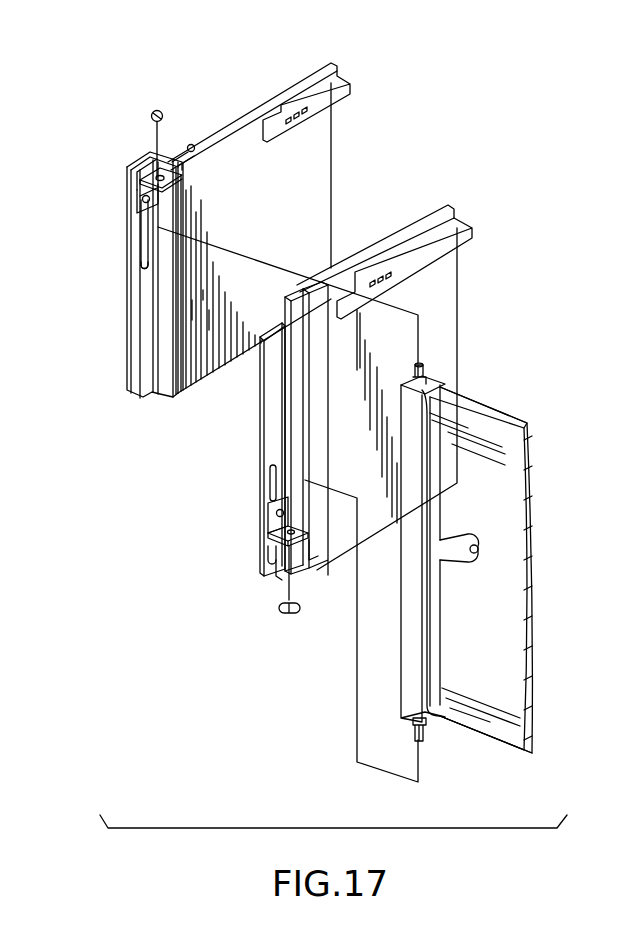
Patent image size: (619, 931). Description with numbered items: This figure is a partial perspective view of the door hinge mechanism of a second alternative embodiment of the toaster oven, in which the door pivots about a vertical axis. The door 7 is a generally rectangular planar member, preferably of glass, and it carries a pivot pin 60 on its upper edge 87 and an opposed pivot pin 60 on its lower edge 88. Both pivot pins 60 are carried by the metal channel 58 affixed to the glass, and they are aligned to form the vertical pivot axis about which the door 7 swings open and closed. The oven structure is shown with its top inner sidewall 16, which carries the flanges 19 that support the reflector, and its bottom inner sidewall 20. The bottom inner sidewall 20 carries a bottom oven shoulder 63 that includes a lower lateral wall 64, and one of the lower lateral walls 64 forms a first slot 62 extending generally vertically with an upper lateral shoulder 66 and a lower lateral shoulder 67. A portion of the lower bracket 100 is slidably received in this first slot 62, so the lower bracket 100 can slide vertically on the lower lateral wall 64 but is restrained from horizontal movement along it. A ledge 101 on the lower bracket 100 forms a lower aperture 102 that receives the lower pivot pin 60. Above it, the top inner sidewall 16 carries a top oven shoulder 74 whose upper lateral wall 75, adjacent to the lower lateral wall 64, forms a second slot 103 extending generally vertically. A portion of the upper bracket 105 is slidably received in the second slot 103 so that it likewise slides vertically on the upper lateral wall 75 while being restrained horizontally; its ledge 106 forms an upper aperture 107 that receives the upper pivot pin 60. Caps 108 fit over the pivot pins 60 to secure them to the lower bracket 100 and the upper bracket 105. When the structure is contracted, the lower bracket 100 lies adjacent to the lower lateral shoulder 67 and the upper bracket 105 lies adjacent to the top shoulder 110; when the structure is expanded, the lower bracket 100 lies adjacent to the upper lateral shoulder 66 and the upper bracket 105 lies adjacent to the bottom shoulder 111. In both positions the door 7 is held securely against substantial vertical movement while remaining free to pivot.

The door 7 is at (535, 497).
The top inner sidewalls 16 is at (333, 152).
The flanges 19 is at (350, 84).
The bottom inner sidewalls 20 is at (458, 292).
The metal channel 58 is at (398, 647).
The pivot pins 60 is at (425, 370).
The first slot 62 is at (270, 501).
The bottom oven shoulders 63 is at (291, 294).
The lower lateral walls 64 is at (262, 425).
The upper lateral shoulder 66 is at (270, 478).
The lower lateral shoulder 67 is at (279, 575).
The top oven shoulders 74 is at (188, 148).
The upper lateral wall 75 is at (127, 355).
The upper edge 87 is at (518, 416).
The lower edge 88 is at (508, 750).
The lower bracket 100 is at (267, 535).
The ledge 101 is at (266, 549).
The lower aperture 102 is at (311, 530).
The second slot 103 is at (141, 236).
The upper bracket 105 is at (137, 195).
The ledge 106 is at (152, 197).
The upper aperture 107 is at (178, 173).
The caps 108 is at (160, 112).
The top shoulder 110 is at (140, 163).
The bottom shoulder 111 is at (141, 270).